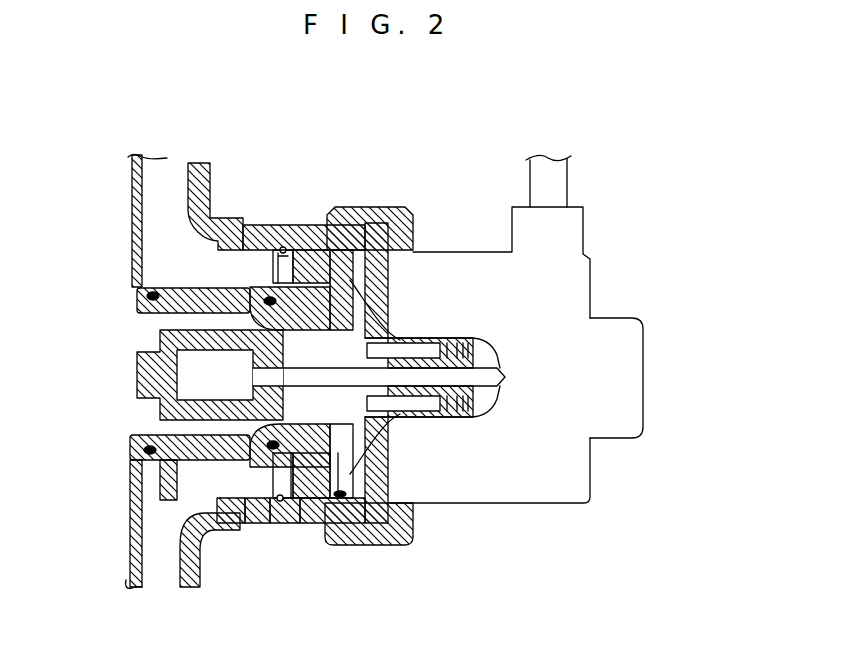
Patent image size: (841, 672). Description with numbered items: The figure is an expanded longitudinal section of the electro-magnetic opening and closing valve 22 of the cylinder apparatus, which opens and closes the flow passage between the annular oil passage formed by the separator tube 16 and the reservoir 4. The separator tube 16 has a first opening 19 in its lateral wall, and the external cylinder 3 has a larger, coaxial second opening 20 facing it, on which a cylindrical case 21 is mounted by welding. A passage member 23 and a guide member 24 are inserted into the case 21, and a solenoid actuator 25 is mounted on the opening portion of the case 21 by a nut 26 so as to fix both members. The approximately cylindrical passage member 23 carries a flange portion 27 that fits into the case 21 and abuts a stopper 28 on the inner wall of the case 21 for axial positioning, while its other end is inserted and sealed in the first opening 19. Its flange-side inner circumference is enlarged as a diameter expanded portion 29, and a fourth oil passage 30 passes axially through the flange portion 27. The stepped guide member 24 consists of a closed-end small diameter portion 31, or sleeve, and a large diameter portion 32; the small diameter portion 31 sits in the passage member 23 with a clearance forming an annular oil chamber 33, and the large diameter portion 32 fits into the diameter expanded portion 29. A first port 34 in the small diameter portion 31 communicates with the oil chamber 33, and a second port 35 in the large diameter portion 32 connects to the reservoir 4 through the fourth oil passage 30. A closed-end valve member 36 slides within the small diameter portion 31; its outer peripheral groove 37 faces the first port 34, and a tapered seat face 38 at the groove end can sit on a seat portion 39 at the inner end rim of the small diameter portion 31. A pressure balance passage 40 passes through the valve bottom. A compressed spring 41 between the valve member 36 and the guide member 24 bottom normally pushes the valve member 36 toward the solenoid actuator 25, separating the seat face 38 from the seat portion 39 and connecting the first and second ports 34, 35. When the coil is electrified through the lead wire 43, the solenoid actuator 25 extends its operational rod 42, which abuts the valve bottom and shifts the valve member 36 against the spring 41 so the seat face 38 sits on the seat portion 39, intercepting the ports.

The external cylinder 3 is at (198, 160).
The reservoir 4 is at (167, 160).
The separator tube 16 is at (135, 157).
The opening (first opening) 19 is at (183, 483).
The opening (second opening) 20 is at (252, 226).
The case 21 is at (312, 226).
The electro-magnetic opening and closing valve 22 is at (596, 236).
The passage member 23 is at (218, 468).
The guide member 24 is at (167, 374).
The solenoid actuator 25 is at (563, 472).
The nut 26 is at (415, 548).
The flange portion 27 is at (313, 513).
The stopper 28 is at (300, 252).
The diameter expanded portion 29 is at (385, 322).
The fourth oil passage 30 is at (333, 252).
The small diameter portion (sleeve) 31 is at (200, 510).
The large diameter portion 32 is at (342, 432).
The annular oil chamber 33 is at (215, 318).
The first port 34 is at (280, 252).
The second port 35 is at (404, 214).
The valve member (valve body) 36 is at (290, 352).
The outer peripheral groove 37 is at (240, 470).
The tapered seat face 38 is at (272, 470).
The seat portion 39 is at (330, 345).
The pressure balance passage 40 is at (392, 420).
The spring (compressed spring) 41 is at (150, 442).
The operational rod 42 is at (428, 380).
The lead wire 43 is at (557, 183).